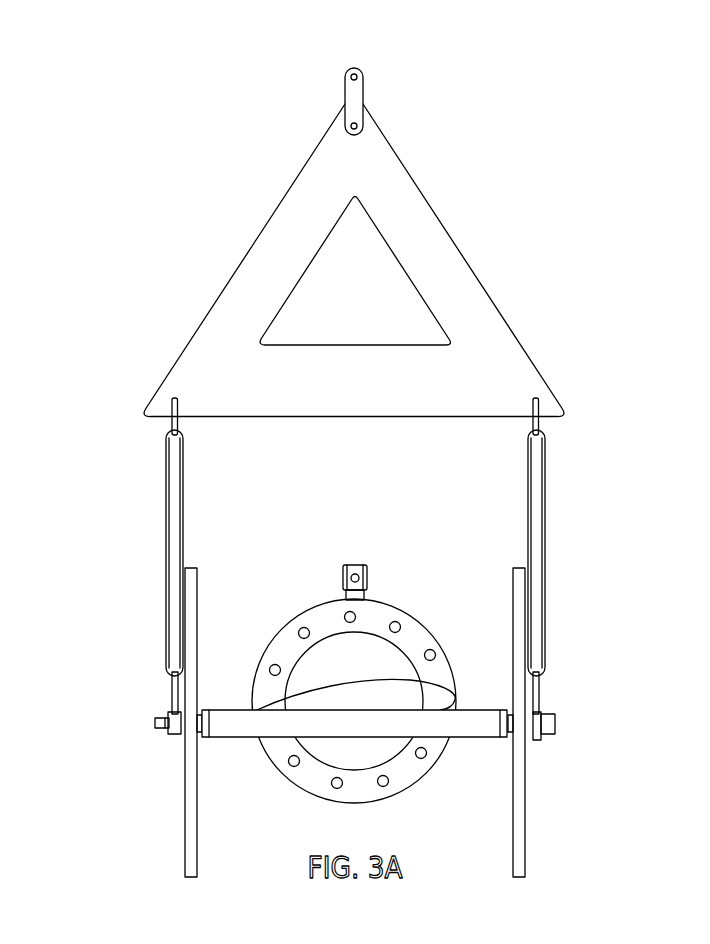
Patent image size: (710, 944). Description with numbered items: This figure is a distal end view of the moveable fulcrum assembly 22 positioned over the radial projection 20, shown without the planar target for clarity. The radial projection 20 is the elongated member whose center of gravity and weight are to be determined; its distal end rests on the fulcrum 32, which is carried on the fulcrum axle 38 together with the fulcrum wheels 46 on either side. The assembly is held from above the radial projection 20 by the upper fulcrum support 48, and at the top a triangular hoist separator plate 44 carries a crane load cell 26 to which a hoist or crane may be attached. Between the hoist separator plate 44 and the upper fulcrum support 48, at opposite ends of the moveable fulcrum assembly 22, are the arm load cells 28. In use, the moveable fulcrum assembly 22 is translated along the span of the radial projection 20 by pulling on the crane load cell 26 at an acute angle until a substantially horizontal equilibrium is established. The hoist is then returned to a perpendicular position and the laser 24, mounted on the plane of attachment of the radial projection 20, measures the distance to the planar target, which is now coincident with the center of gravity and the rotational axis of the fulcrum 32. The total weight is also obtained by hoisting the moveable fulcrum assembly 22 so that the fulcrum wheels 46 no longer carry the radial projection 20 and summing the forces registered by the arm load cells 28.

The radial projection 20 is at (383, 673).
The moveable fulcrum assembly 22 is at (373, 450).
The laser 24 is at (360, 563).
The crane load cell 26 is at (355, 93).
The arm load cell 28 is at (172, 507).
The fulcrum 32 is at (354, 774).
The fulcrum axle 38 is at (553, 718).
The hoist separator plate 44 is at (425, 260).
The fulcrum wheel 46 is at (188, 775).
The upper fulcrum support 48 is at (170, 727).